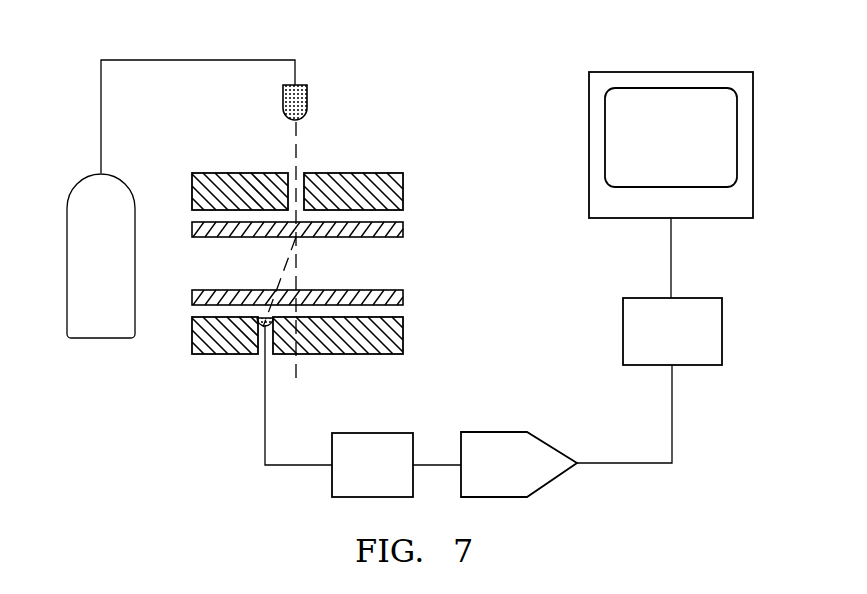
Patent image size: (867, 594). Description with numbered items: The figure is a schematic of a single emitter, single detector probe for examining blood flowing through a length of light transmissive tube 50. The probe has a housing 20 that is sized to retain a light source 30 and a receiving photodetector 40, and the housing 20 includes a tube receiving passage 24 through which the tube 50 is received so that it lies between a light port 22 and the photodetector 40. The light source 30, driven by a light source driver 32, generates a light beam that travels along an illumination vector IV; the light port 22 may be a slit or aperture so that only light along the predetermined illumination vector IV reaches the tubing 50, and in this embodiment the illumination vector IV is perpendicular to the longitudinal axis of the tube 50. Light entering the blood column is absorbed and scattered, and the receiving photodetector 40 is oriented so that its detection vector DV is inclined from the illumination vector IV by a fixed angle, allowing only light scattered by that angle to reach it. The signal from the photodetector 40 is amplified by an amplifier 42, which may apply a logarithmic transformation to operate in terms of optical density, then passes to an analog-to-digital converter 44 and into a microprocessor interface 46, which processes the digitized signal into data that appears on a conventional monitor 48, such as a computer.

The housing 20 is at (405, 178).
The light port 22 is at (287, 196).
The tube receiving passage 24 is at (192, 352).
The light source 30 is at (314, 96).
The light source driver 32 is at (115, 269).
The receiving photodetector 40 is at (262, 322).
The amplifier 42 is at (386, 476).
The analog-to-digital converter 44 is at (514, 476).
The microprocessor interface 46 is at (684, 343).
The monitor 48 is at (684, 150).
The light transmissive tube 50 is at (368, 290).
The illumination vector IV is at (299, 173).
The detection vector DV is at (278, 285).